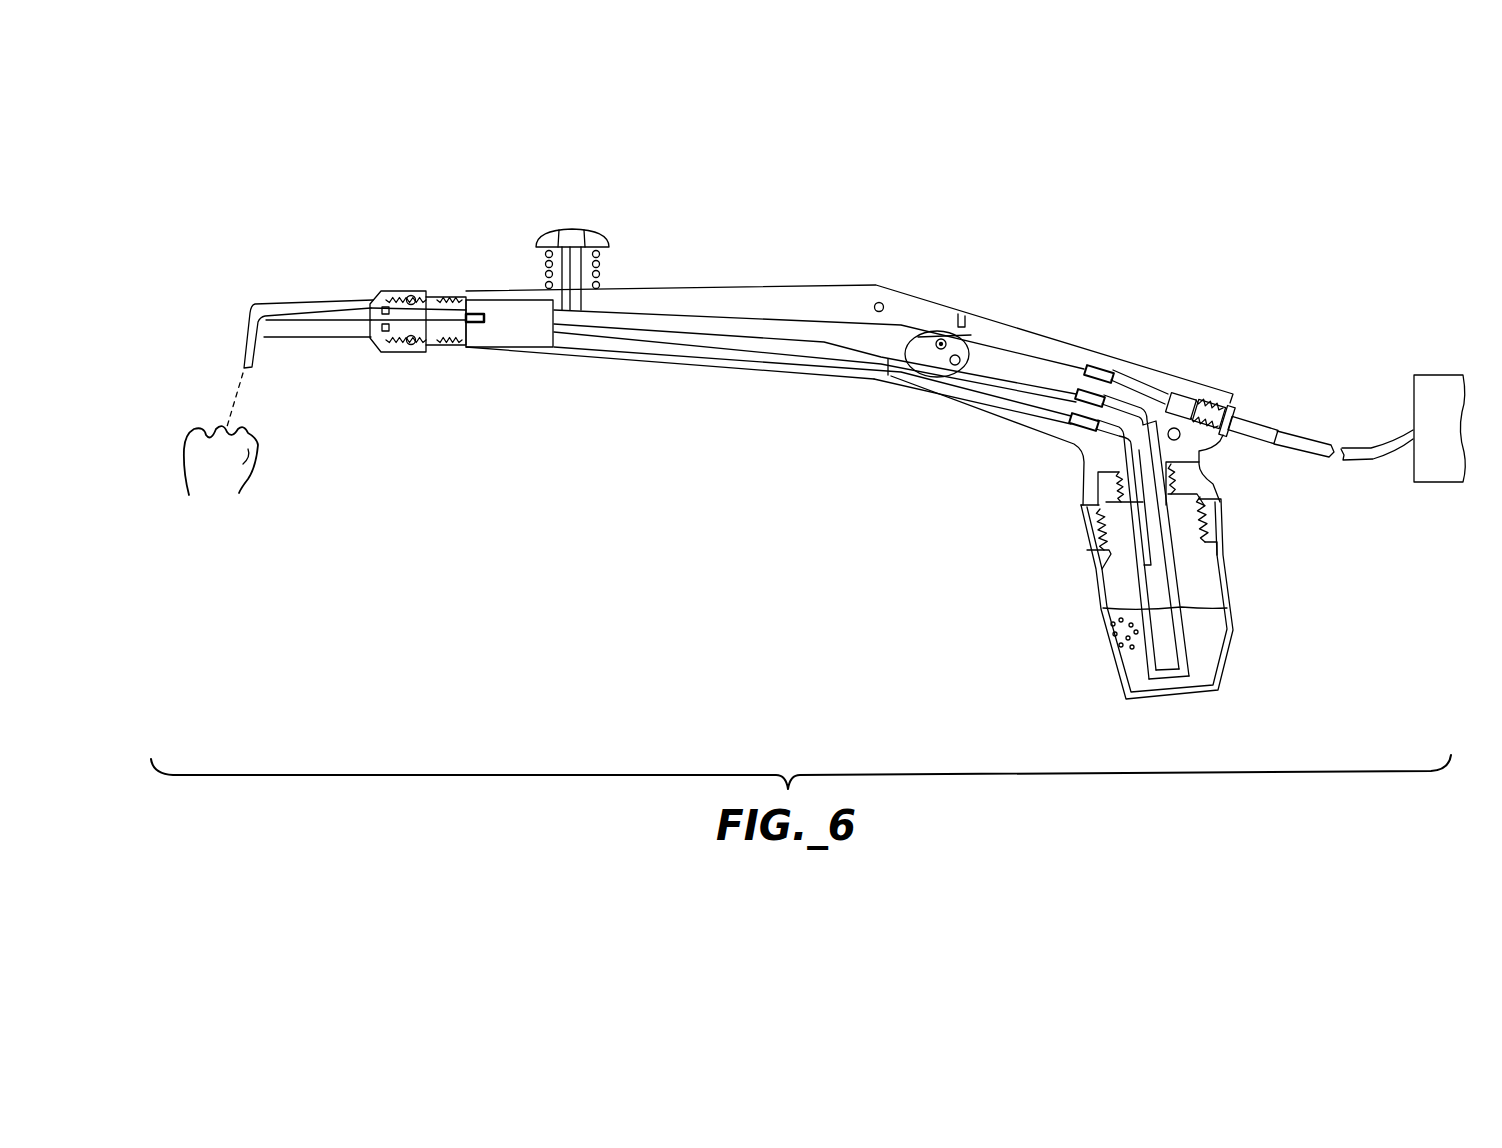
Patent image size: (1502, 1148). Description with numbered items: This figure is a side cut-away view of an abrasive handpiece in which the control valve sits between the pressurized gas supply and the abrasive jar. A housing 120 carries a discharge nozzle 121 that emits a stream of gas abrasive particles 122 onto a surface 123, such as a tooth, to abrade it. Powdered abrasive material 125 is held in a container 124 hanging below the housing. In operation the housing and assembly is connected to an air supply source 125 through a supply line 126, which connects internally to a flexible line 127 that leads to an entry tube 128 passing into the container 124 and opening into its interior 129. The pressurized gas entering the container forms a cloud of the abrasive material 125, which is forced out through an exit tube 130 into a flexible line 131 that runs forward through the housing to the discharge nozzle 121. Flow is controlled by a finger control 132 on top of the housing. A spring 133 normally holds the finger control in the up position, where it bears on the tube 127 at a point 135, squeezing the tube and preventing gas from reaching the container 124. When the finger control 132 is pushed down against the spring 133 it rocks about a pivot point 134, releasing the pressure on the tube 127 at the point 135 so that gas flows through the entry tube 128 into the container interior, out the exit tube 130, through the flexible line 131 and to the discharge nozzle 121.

The housing 120 is at (755, 238).
The discharge nozzle 121 is at (253, 350).
The stream of gas abrasive particles 122 is at (235, 401).
The surface 123 is at (245, 450).
The container 124 is at (1228, 568).
The powdered abrasive material / air supply source 125 is at (1423, 372).
The supply line 126 is at (1297, 425).
The flexible line 127 is at (1025, 360).
The entry tube 128 is at (1095, 452).
The interior of container 129 is at (1108, 585).
The exit tube 130 is at (1127, 392).
The flexible line 131 is at (530, 325).
The finger control 132 is at (572, 229).
The spring 133 is at (546, 275).
The pivot point 134 is at (882, 300).
The point 135 is at (942, 338).